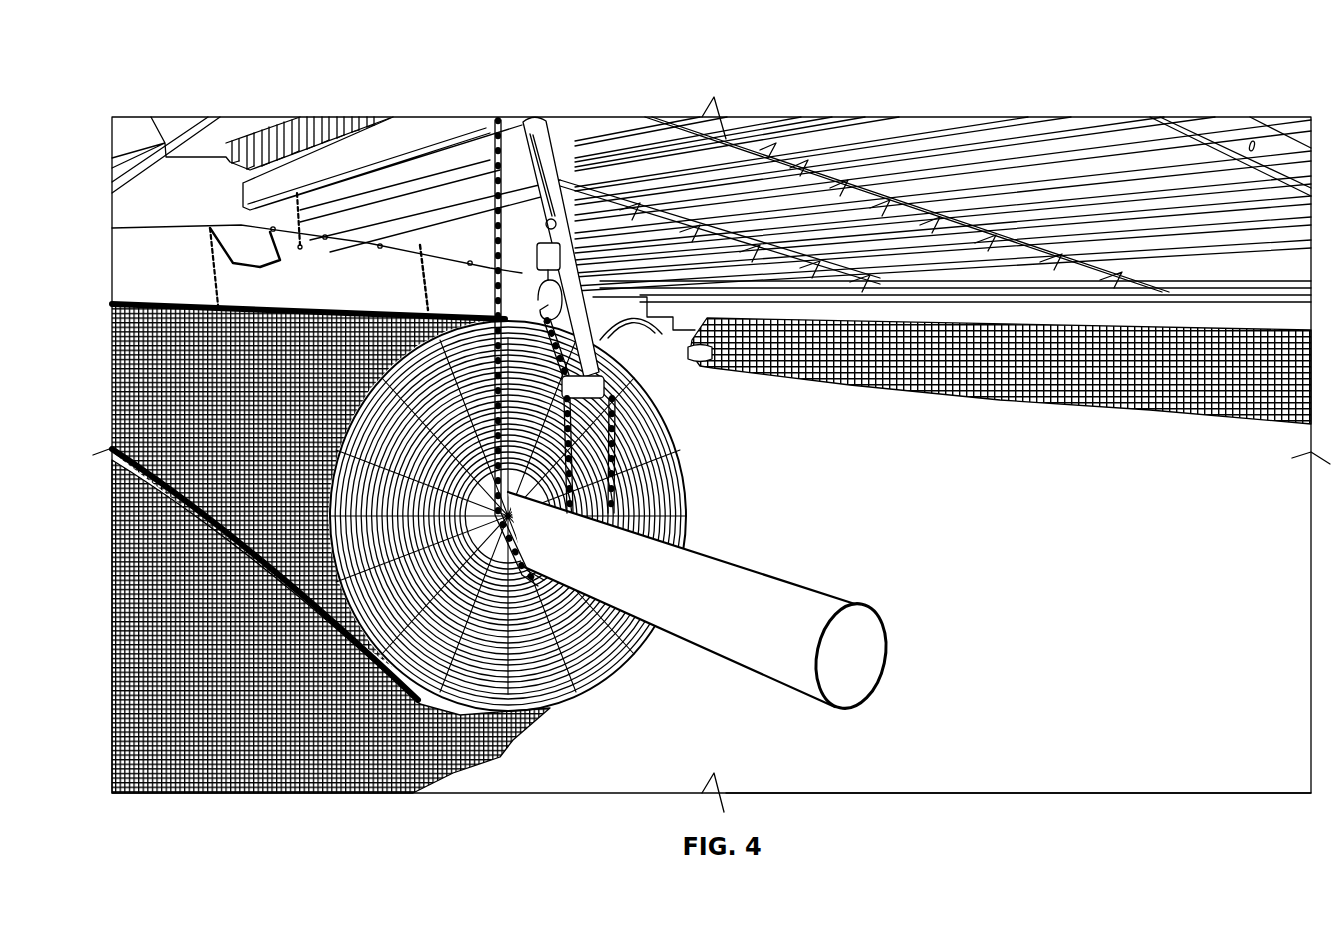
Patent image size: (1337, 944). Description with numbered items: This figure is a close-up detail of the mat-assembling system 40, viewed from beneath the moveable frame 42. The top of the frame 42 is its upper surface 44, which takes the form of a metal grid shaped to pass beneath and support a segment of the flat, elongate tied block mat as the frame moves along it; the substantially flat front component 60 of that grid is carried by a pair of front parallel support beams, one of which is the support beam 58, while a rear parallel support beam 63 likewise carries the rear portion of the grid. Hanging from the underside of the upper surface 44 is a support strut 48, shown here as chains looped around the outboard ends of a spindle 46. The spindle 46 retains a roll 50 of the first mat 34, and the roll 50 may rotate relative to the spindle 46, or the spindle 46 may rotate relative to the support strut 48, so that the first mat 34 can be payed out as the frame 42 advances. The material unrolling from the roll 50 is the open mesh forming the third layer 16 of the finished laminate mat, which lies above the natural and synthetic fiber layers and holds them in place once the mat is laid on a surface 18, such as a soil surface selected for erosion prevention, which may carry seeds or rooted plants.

The third layer 16 is at (163, 781).
The surface 18 is at (964, 762).
The first mat 34 is at (399, 511).
The system 40 is at (838, 101).
The moveable frame 42 is at (1230, 134).
The upper surface 44 is at (580, 132).
The spindle 46 is at (810, 684).
The support strut 48 is at (483, 143).
The roll 50 is at (467, 319).
The front parallel support beam 58 is at (416, 247).
The front component 60 is at (1277, 135).
The rear parallel support beam 63 is at (193, 215).